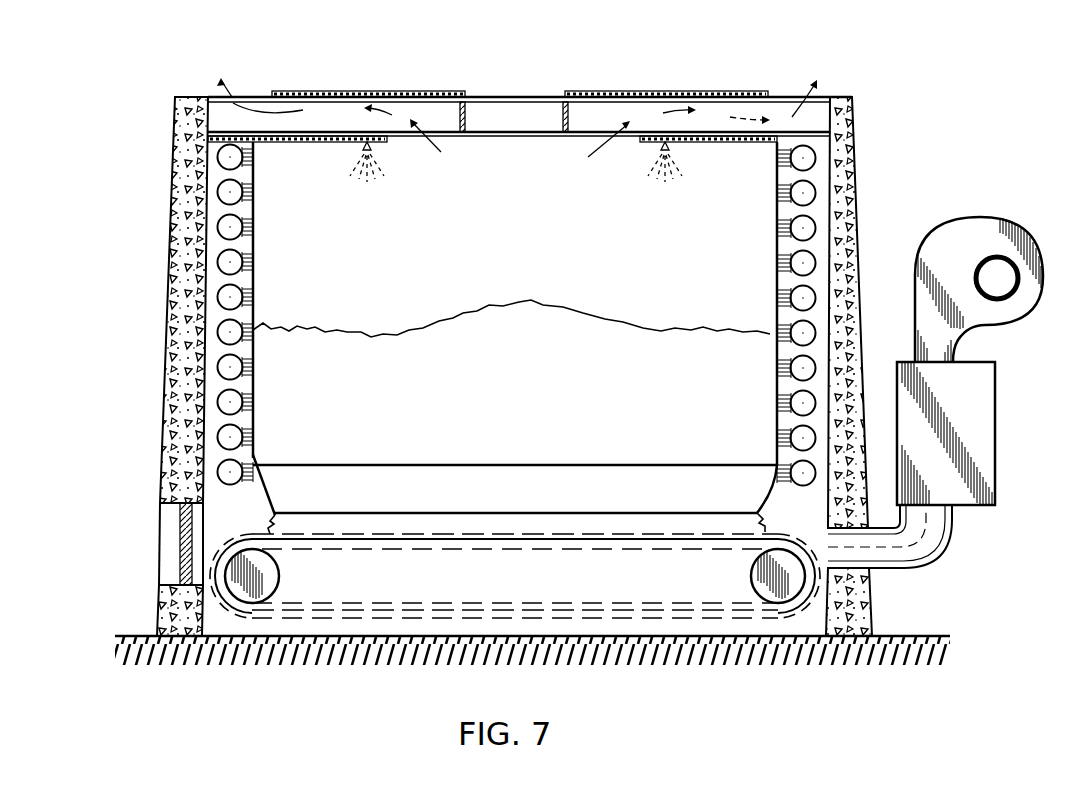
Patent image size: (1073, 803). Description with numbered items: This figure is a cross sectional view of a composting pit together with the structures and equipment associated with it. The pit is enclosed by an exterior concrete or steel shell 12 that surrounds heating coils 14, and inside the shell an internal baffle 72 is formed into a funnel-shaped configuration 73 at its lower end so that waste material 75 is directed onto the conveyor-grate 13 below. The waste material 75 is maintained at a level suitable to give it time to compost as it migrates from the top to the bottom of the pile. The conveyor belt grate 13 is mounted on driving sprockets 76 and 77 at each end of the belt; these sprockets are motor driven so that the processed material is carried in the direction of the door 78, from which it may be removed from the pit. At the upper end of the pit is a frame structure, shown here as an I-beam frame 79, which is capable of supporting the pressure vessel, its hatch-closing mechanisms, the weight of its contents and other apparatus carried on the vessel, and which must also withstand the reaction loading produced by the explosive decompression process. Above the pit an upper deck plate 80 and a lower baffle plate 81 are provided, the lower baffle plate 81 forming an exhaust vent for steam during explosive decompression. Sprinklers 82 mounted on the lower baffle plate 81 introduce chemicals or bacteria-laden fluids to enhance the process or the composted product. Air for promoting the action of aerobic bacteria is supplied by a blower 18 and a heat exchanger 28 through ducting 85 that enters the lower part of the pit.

The exterior concrete or steel shell 12 is at (855, 166).
The conveyor-grate 13 is at (548, 548).
The heating coils 14 is at (815, 193).
The blower 18 is at (1014, 231).
The heat exchanger 28 is at (1000, 393).
The internal baffle 72 is at (777, 209).
The funnel-shaped configuration 73 is at (266, 492).
The waste material 75 is at (485, 311).
The driving sprocket 76 is at (800, 582).
The driving sprocket 77 is at (280, 576).
The door 78 is at (180, 571).
The I-beam frame 79 is at (500, 137).
The upper deck plate 80 is at (565, 91).
The lower baffle plate 81 is at (292, 140).
The sprinklers 82 is at (374, 150).
The ducting 85 is at (950, 541).